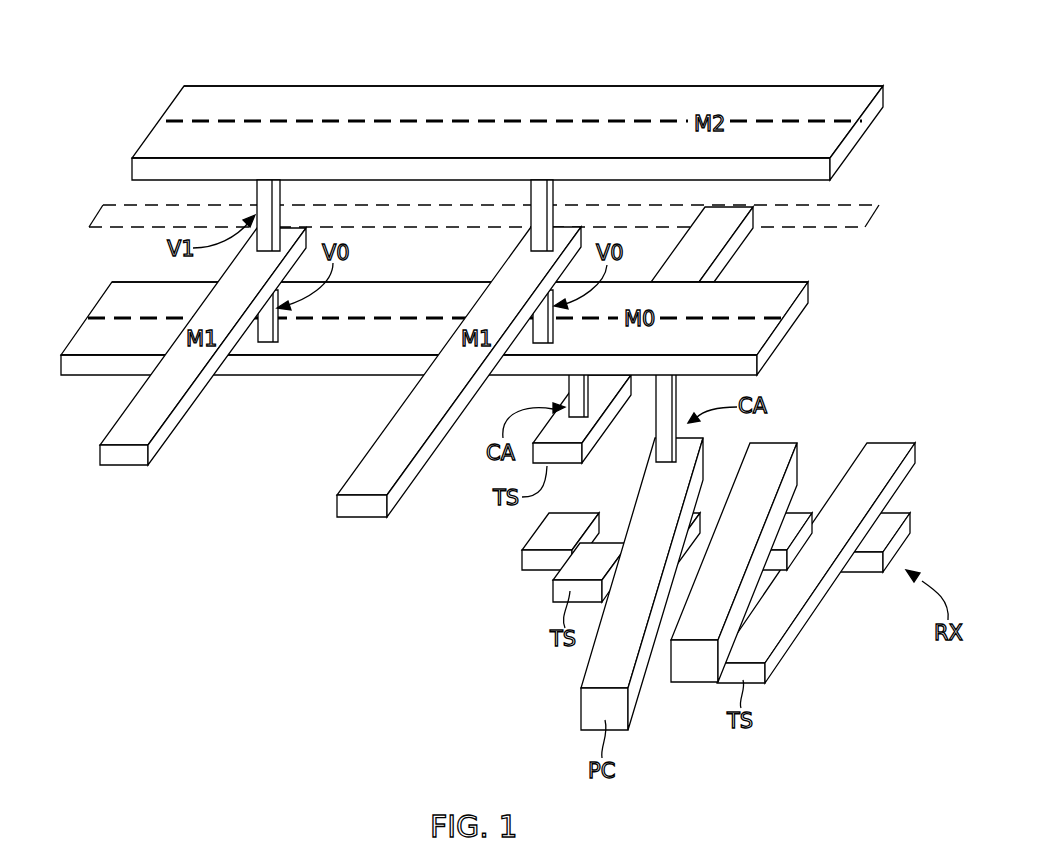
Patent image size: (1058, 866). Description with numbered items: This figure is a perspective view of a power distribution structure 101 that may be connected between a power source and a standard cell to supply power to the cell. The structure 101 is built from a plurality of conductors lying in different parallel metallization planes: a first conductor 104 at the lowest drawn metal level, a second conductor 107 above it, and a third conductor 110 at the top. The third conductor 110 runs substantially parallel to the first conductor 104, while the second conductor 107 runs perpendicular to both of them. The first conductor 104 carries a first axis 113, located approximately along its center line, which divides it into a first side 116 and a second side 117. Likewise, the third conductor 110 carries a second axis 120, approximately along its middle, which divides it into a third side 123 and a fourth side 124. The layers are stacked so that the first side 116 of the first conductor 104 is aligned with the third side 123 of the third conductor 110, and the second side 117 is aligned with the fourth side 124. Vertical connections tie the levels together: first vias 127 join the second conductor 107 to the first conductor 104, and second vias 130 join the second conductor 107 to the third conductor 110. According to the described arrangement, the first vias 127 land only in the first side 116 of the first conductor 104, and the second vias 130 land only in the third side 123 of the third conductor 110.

The power distribution structure 101 is at (198, 642).
The first conductor (M0) 104 is at (78, 334).
The second conductor (M1) 107 is at (127, 463).
The third conductor (M2) 110 is at (147, 134).
The first axis 113 is at (796, 314).
The first side 116 is at (736, 340).
The second side 117 is at (738, 297).
The second axis 120 is at (810, 120).
The third side 123 is at (800, 143).
The fourth side 124 is at (802, 99).
The first vias (V0) 127 is at (535, 338).
The second vias (V1) 130 is at (533, 195).